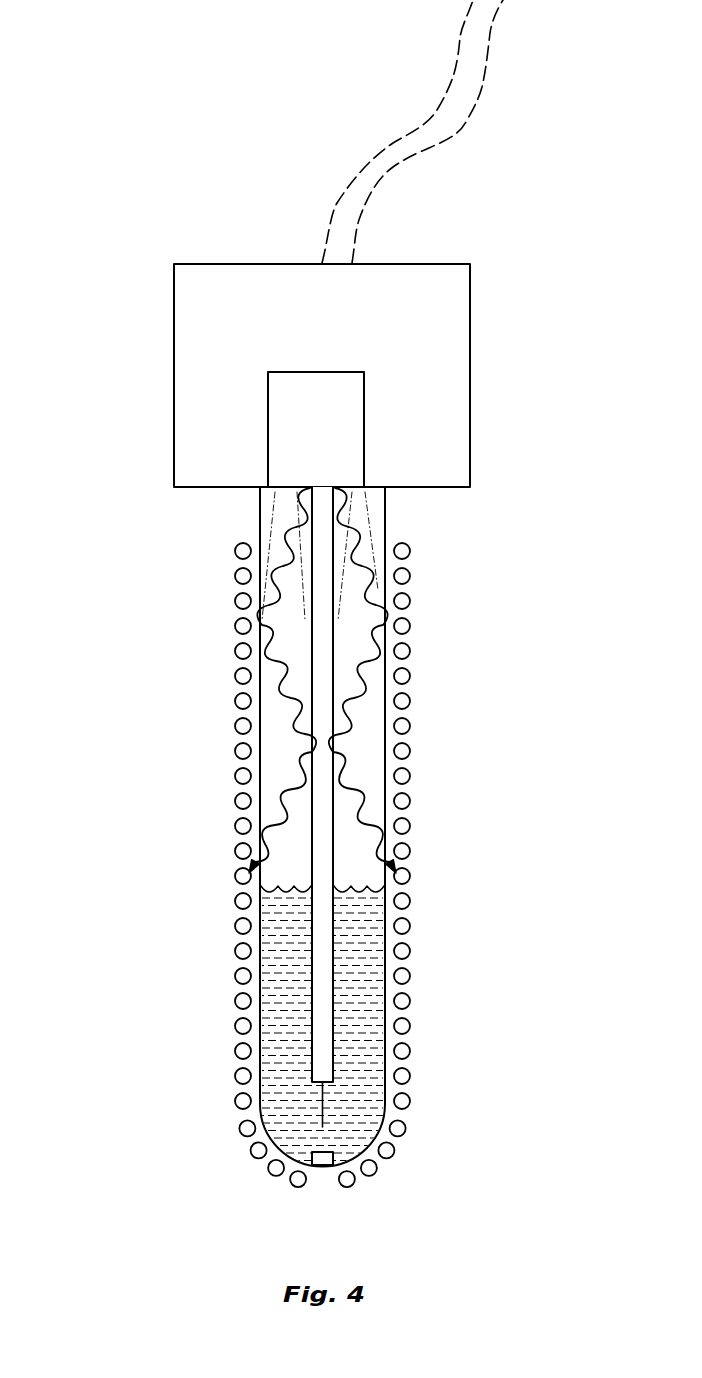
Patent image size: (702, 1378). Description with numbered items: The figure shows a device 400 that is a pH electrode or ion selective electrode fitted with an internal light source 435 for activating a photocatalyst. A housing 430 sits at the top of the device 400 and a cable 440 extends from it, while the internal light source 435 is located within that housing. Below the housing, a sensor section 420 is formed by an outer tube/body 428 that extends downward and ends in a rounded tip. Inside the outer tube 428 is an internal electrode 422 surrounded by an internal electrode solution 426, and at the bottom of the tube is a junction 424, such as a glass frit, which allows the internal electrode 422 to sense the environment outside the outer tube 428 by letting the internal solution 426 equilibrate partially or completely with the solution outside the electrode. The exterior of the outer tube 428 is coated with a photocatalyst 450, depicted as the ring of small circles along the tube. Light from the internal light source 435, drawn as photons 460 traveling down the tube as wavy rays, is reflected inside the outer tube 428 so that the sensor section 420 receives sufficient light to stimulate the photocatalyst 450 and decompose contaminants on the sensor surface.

The device 400 is at (112, 133).
The sensor section 420 is at (197, 656).
The internal electrode 422 is at (322, 983).
The junction 424 is at (322, 1165).
The internal electrode solution 426 is at (372, 1048).
The outer tube/body 428 is at (385, 770).
The housing 430 is at (455, 303).
The internal light source 435 is at (353, 425).
The cable 440 is at (455, 108).
The photocatalyst 450 is at (410, 926).
The photons 460 is at (376, 664).